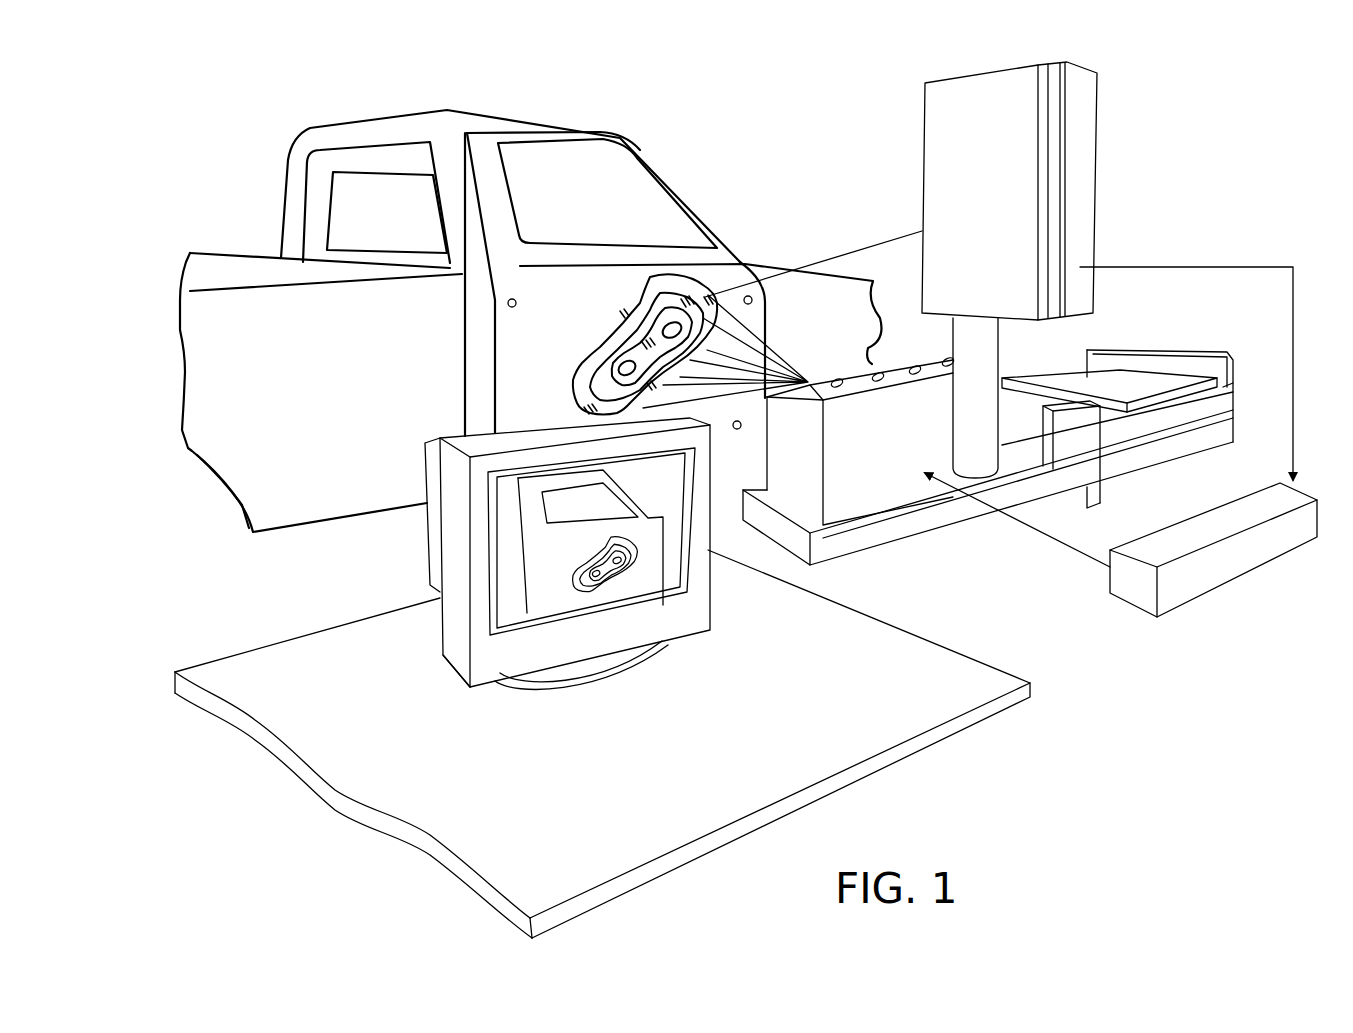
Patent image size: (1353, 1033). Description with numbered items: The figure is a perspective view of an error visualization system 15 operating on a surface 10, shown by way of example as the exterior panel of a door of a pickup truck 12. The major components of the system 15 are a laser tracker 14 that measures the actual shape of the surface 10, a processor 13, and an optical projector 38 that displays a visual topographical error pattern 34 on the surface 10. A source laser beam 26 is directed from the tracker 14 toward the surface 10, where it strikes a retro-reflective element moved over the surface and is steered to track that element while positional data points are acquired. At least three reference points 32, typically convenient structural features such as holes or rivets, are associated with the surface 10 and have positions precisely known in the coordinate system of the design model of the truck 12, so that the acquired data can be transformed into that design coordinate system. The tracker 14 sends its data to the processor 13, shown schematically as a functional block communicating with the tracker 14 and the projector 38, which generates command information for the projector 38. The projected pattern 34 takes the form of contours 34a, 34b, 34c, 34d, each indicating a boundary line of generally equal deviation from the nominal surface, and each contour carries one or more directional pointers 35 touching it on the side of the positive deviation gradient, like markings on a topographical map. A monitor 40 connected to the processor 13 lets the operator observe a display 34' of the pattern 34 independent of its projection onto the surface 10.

The surface 10 is at (712, 270).
The pickup truck 12 is at (444, 90).
The processor 13 is at (1227, 565).
The laser tracker 14 is at (1009, 270).
The visualization system 15 is at (1166, 86).
The source laser beam 26 is at (882, 242).
The reference points 32 is at (507, 303).
The visual topographical error pattern 34 is at (608, 298).
The contour 34a is at (645, 290).
The contour 34b is at (627, 287).
The contour 34c is at (646, 312).
The contour 34d is at (660, 335).
The directional pointers 35 is at (681, 298).
The optical projector 38 is at (988, 460).
The monitor 40 is at (568, 553).
The display of the pattern 34' is at (659, 603).